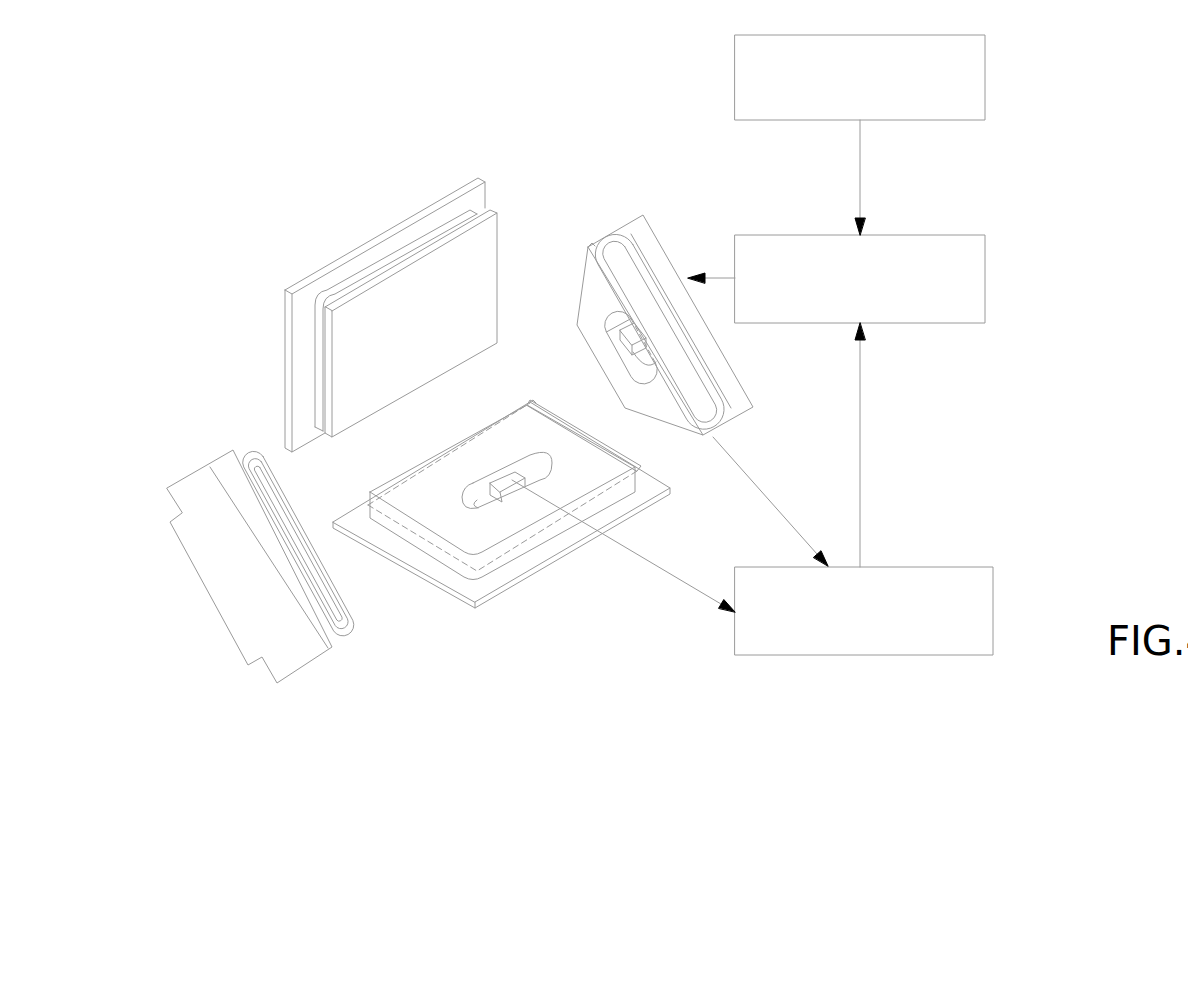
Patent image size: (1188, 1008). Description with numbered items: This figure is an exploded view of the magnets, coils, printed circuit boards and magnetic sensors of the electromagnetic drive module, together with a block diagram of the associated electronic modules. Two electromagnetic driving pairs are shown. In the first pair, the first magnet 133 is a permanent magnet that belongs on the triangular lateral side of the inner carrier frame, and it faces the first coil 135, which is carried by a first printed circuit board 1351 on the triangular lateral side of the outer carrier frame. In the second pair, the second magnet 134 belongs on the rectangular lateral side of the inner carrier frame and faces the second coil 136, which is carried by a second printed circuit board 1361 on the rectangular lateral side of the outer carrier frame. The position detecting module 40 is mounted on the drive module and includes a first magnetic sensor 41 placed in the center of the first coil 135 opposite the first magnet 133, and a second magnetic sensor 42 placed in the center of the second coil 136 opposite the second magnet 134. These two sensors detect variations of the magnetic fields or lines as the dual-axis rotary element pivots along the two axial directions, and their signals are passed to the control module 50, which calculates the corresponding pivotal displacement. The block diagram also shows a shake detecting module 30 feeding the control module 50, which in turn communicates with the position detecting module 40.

The shake detecting module 30 is at (985, 66).
The control module 50 is at (985, 279).
The position detecting module 40 is at (993, 599).
The first magnet 133 is at (258, 460).
The second magnet 134 is at (442, 262).
The first coil 135 is at (245, 477).
The second coil 136 is at (375, 267).
The first printed circuit board 1351 is at (195, 510).
The second printed circuit board 1361 is at (300, 295).
The first magnetic sensor 41 is at (620, 350).
The second magnetic sensor 42 is at (502, 493).